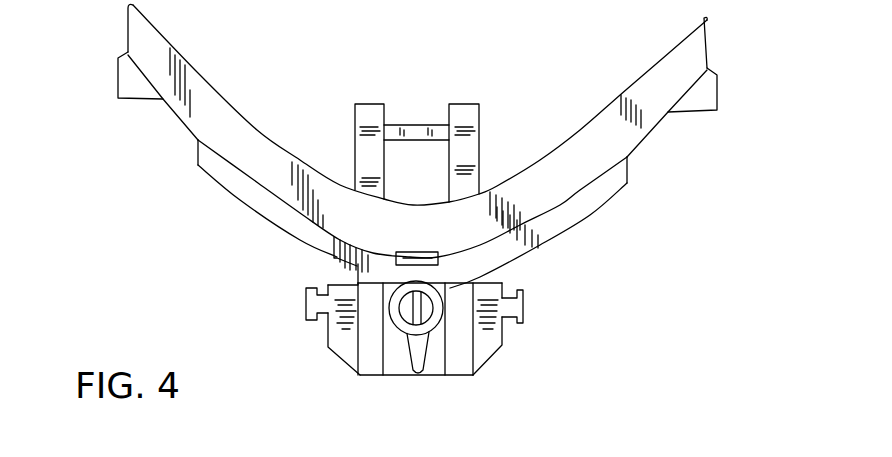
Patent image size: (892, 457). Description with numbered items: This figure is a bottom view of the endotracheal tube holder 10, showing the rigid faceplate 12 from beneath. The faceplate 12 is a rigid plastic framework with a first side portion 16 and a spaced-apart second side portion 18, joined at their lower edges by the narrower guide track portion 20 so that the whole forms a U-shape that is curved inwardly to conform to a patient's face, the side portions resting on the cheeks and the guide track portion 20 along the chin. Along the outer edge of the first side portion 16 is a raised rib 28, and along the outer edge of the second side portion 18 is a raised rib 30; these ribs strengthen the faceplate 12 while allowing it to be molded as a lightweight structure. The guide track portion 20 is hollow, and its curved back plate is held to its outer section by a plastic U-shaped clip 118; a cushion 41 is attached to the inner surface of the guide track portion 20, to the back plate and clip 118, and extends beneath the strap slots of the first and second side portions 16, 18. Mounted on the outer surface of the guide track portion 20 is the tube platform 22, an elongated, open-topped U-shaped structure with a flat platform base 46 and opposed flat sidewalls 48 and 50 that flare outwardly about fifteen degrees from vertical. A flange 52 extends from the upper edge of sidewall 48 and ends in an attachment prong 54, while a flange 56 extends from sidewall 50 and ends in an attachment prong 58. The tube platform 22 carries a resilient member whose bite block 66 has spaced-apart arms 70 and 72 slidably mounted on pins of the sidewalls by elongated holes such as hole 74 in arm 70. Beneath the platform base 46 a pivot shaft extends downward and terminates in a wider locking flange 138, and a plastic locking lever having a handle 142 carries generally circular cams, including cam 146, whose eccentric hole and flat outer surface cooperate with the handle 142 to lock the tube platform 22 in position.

The endotracheal tube holder 10 is at (99, 52).
The faceplate 12 is at (712, 70).
The first side portion 16 is at (607, 198).
The second side portion 18 is at (230, 193).
The guide track portion 20 is at (337, 257).
The tube platform 22 is at (537, 352).
The raised rib 28 is at (697, 113).
The raised rib 30 is at (127, 100).
The cushion 41 is at (592, 118).
The platform base 46 is at (397, 377).
The sidewall 48 is at (460, 377).
The sidewall 50 is at (371, 377).
The flange 52 is at (503, 337).
The attachment prong 54 is at (527, 307).
The flange 56 is at (328, 348).
The attachment prong 58 is at (306, 305).
The bite block 66 is at (339, 149).
The arm 70 is at (468, 103).
The arm 72 is at (368, 102).
The hole 74 is at (416, 124).
The clip 118 is at (428, 250).
The locking flange 138 is at (427, 315).
The handle 142 is at (424, 360).
The cam 146 is at (422, 290).